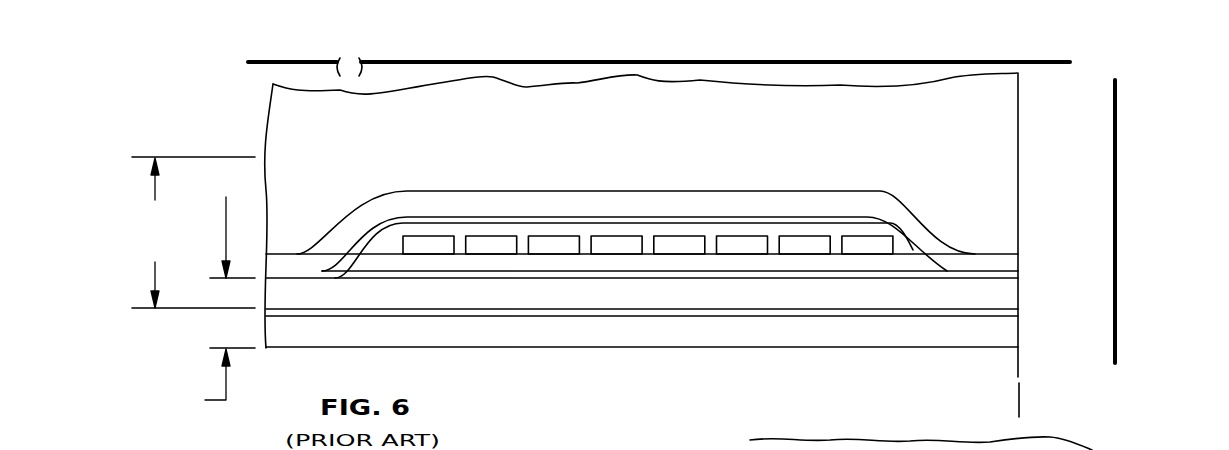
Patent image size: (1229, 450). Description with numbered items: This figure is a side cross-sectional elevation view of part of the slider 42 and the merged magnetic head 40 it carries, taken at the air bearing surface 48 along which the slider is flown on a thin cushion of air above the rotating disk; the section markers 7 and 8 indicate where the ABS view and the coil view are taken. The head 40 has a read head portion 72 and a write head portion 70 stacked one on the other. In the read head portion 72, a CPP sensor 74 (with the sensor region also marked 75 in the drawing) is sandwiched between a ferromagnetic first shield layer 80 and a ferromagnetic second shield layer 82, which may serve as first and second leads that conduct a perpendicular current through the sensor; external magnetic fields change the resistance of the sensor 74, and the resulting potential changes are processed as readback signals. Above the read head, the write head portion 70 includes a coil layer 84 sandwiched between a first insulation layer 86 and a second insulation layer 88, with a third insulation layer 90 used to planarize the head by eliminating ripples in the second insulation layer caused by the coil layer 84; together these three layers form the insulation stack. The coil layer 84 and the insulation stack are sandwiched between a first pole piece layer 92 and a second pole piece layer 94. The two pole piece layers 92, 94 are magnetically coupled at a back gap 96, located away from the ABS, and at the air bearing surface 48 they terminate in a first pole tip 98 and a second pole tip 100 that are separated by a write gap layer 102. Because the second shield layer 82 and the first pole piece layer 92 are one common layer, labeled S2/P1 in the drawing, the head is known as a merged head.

The section line 7- 7 is at (1119, 93).
The section line 8- 8 is at (255, 60).
The magnetic head 40 is at (258, 90).
The slider 42 is at (1000, 105).
The air bearing surface 48 is at (1019, 386).
The write head portion 70 is at (176, 232).
The read head portion 72 is at (172, 380).
The CPP sensor 74 is at (1020, 312).
The read sensor 75 is at (597, 312).
The first shield layer 80 is at (772, 333).
The second shield layer 82 is at (875, 292).
The first pole piece layer 92 is at (875, 292).
The coil layer 84 is at (620, 245).
The first insulation layer 86 is at (502, 263).
The second insulation layer 88 is at (905, 247).
The third insulation layer 90 is at (428, 219).
The second pole piece layer 94 is at (785, 191).
The back gap 96 is at (292, 272).
The first pole tip 98 is at (1020, 290).
The second pole tip 100 is at (1013, 258).
The write gap layer 102 is at (1020, 270).